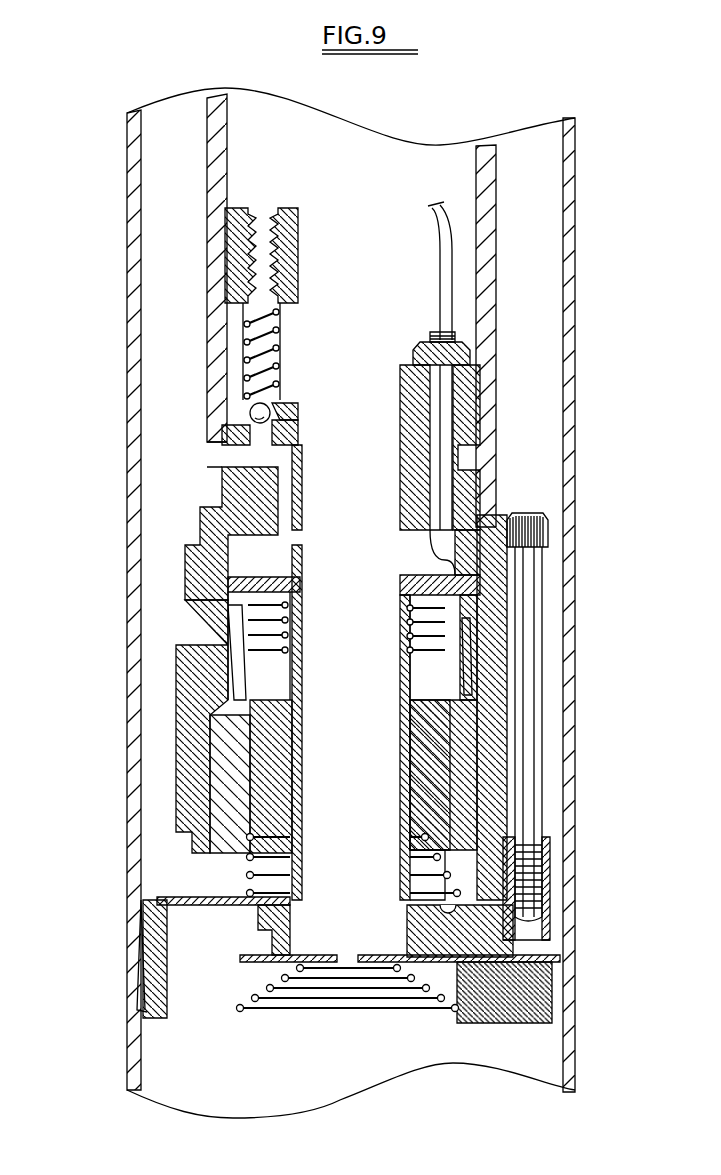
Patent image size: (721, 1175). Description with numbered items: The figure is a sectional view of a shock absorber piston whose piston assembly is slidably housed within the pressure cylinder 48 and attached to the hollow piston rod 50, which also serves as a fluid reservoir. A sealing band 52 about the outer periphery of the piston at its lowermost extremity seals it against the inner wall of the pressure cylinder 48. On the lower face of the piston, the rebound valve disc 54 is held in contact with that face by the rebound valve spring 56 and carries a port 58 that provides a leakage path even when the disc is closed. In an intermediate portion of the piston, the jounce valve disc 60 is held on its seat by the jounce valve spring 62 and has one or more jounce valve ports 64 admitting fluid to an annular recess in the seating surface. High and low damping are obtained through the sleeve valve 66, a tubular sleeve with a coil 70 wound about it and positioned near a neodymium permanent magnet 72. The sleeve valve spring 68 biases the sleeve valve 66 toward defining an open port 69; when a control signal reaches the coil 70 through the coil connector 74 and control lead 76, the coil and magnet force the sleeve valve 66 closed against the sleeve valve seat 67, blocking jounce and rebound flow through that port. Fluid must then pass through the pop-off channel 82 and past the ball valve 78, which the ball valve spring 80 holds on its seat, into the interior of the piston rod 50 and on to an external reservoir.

The pressure cylinder 48 is at (576, 288).
The piston rod 50 is at (210, 105).
The sealing band 52 is at (150, 963).
The rebound valve disc 54 is at (540, 960).
The rebound valve spring 56 is at (402, 1010).
The port 58 is at (345, 1002).
The jounce valve disc 60 is at (165, 897).
The jounce valve spring 62 is at (250, 872).
The jounce valve port 64 is at (510, 865).
The sleeve valve 66 is at (400, 586).
The sleeve valve seat 67 is at (407, 910).
The sleeve valve spring 68 is at (190, 605).
The open port 69 is at (298, 898).
The coil 70 is at (465, 667).
The permanent magnet 72 is at (480, 770).
The coil connector 74 is at (445, 553).
The control lead 76 is at (432, 222).
The ball valve 78 is at (285, 404).
The ball valve spring 80 is at (243, 328).
The pop-off channel 82 is at (222, 457).